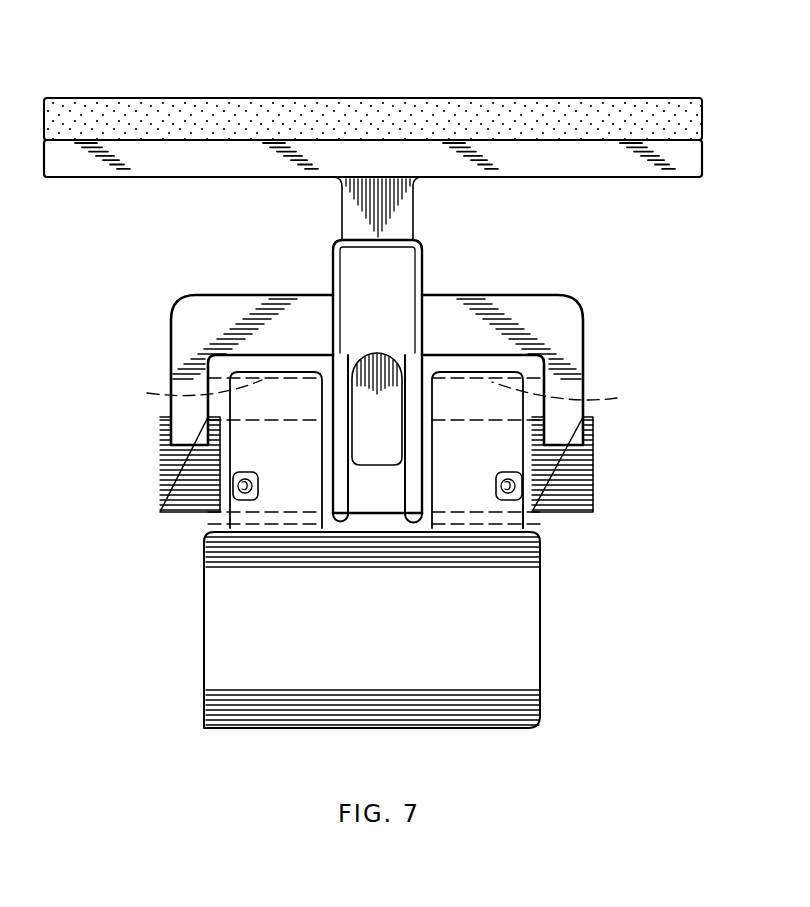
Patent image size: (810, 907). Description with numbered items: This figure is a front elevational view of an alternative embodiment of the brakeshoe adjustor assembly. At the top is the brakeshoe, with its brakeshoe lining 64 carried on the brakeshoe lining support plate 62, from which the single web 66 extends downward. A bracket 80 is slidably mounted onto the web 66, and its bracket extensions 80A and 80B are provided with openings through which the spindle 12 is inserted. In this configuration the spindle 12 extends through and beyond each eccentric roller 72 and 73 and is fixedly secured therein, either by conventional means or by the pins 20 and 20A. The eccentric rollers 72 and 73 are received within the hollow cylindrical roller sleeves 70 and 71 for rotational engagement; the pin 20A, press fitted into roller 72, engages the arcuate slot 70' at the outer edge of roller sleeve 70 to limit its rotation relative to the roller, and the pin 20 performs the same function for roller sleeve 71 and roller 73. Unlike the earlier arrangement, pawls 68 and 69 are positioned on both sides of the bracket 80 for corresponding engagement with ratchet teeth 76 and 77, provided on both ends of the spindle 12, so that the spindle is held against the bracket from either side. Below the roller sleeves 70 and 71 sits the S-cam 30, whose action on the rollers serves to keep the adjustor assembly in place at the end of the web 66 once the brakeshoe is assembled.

The brakeshoe lining 64 is at (268, 112).
The brakeshoe lining support plate 62 is at (682, 169).
The web 66 is at (347, 208).
The bracket 80 is at (348, 277).
The bracket extension 80A is at (410, 505).
The bracket extension 80B is at (340, 505).
The pawl 69 is at (197, 303).
The pawl 68 is at (557, 306).
The roller sleeve 70 is at (265, 421).
The roller sleeve 71 is at (456, 371).
The eccentric roller 72 is at (183, 384).
The eccentric roller 73 is at (571, 396).
The arcuate slot 70' is at (267, 467).
The pin 20 is at (503, 491).
The pin 20A is at (236, 496).
The ratchet teeth 77 is at (168, 463).
The ratchet teeth 76 is at (583, 498).
The spindle 12 is at (527, 508).
The S-cam 30 is at (212, 600).